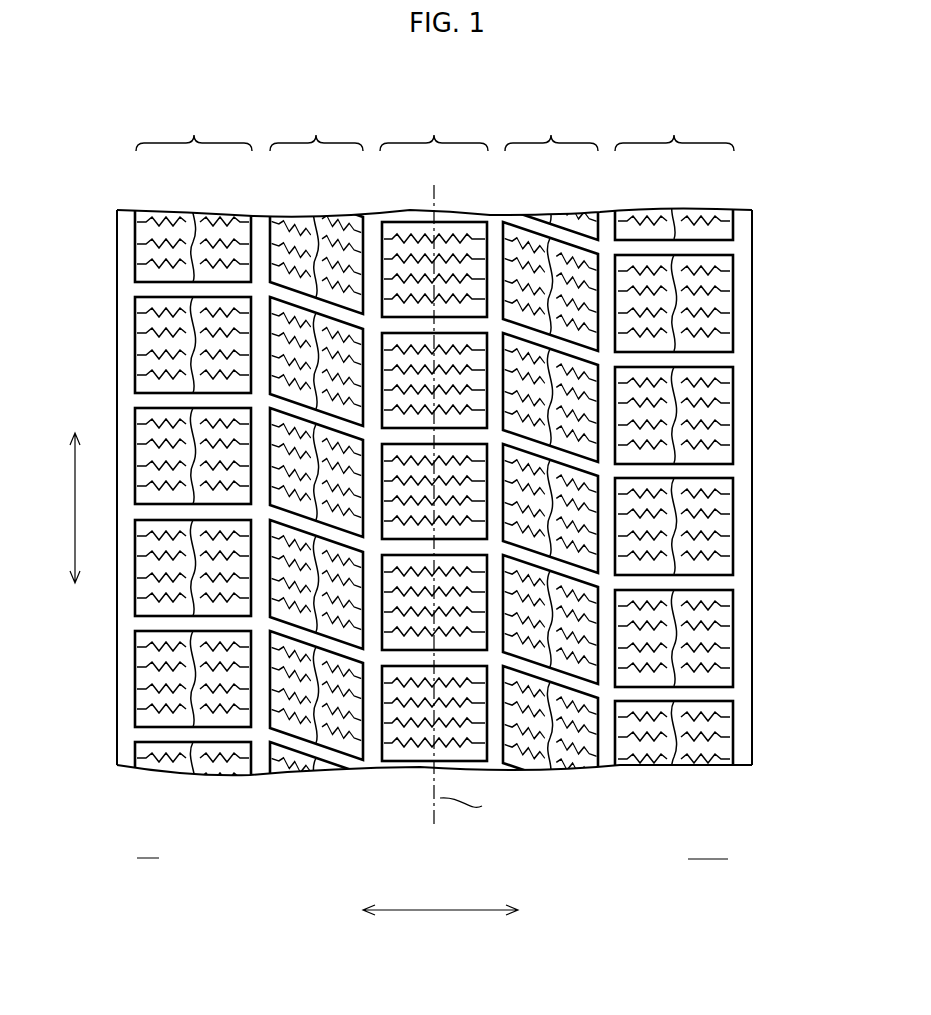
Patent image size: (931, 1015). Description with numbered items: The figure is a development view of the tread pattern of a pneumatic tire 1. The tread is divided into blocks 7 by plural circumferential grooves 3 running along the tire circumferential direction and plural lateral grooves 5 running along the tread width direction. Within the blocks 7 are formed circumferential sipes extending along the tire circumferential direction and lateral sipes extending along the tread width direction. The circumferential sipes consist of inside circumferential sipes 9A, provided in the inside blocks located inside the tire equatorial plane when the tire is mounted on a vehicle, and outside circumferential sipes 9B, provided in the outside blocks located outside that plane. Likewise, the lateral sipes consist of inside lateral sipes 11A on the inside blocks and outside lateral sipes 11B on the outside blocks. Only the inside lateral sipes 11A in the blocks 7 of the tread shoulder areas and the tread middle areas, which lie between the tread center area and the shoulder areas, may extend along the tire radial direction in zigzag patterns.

The pneumatic tire 1 is at (430, 512).
The circumferential groove 3 is at (258, 218).
The lateral groove 5 is at (722, 358).
The block 7 is at (747, 302).
The inside circumferential sipe 9A is at (190, 225).
The outside circumferential sipe 9B is at (546, 240).
The inside lateral sipe 11A is at (152, 320).
The outside lateral sipe 11B is at (720, 266).